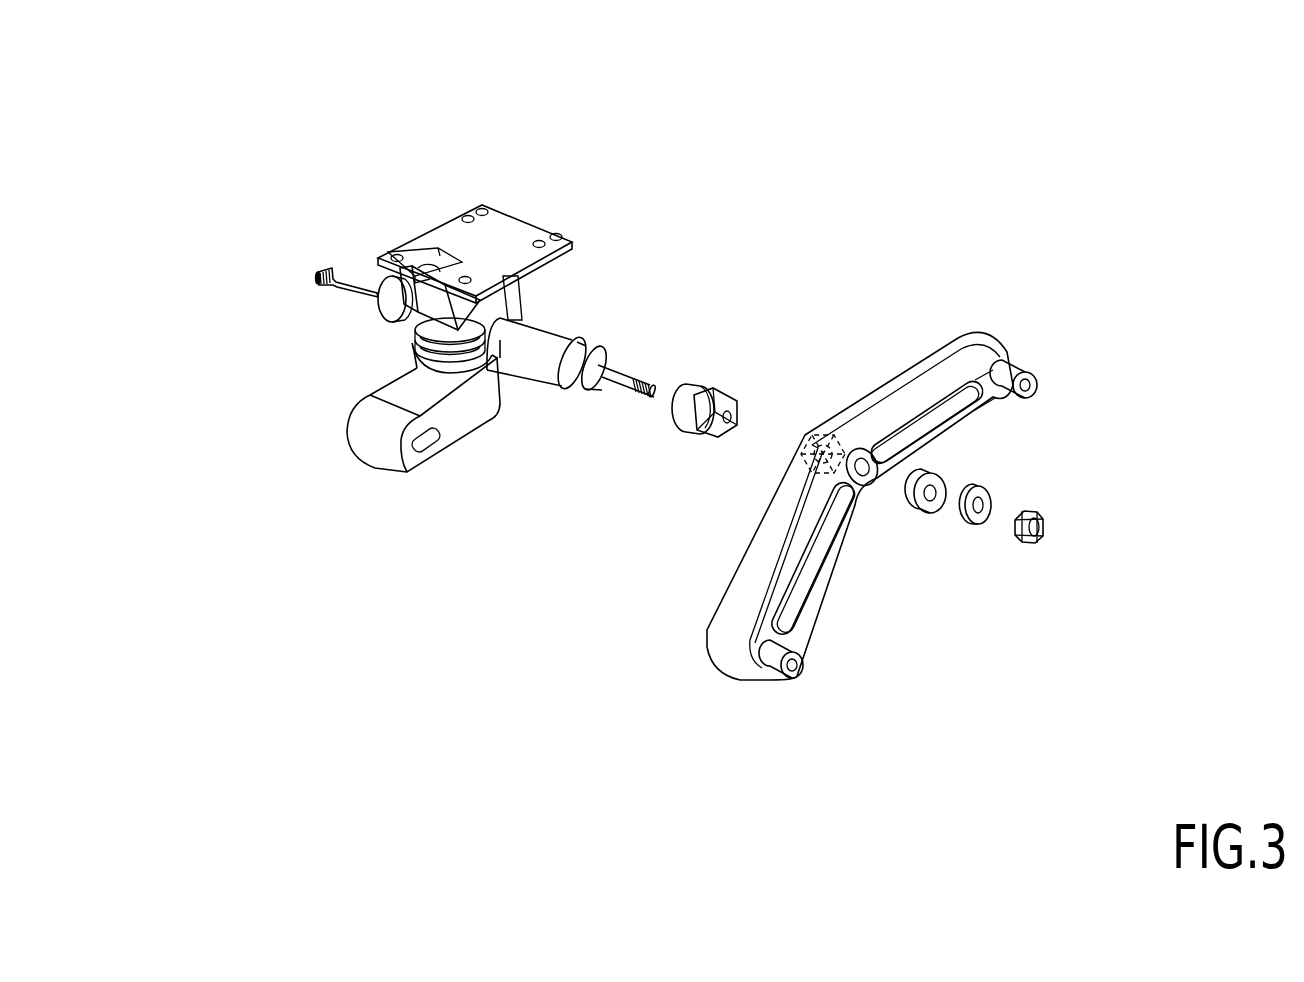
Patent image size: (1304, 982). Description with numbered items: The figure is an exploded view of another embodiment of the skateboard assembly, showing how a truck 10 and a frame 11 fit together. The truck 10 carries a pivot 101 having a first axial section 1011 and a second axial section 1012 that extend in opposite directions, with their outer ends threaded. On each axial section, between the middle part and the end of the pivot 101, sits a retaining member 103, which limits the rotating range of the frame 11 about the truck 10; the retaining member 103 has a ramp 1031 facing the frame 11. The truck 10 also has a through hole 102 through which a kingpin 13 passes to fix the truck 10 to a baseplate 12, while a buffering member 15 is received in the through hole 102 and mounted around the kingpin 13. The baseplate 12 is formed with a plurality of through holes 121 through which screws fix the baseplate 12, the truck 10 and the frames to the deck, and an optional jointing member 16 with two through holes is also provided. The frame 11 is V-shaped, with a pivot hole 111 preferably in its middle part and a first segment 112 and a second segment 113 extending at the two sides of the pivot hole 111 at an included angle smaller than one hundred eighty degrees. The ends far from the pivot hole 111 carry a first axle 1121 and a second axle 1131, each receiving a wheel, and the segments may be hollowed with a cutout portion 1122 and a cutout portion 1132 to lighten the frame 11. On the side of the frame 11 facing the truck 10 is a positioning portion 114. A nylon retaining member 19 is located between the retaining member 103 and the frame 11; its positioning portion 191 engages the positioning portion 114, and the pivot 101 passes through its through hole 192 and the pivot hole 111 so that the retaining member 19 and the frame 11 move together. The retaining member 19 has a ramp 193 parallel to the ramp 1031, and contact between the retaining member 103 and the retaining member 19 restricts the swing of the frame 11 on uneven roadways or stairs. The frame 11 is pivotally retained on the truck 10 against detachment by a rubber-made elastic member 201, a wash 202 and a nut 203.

The truck 10 is at (518, 389).
The pivot 101 is at (542, 360).
The through hole 102 is at (437, 350).
The retaining member 103 is at (563, 378).
The ramp 1031 is at (587, 385).
The first axial section 1011 is at (645, 405).
The second axial section 1012 is at (385, 291).
The frame 11 is at (870, 385).
The pivot hole 111 is at (867, 473).
The first segment 112 is at (730, 660).
The first axle 1121 is at (772, 670).
The cutout portion 1122 is at (820, 565).
The second segment 113 is at (913, 392).
The second axle 1131 is at (1020, 368).
The cutout portion 1132 is at (970, 400).
The positioning portion 114 is at (860, 480).
The baseplate 12 is at (430, 232).
The through holes 121 is at (478, 212).
The kingpin 13 is at (432, 268).
The buffering member 15 is at (437, 340).
The jointing member 16 is at (387, 427).
The retaining member 19 is at (713, 383).
The positioning portion 191 is at (741, 399).
The through hole 192 is at (735, 413).
The ramp 193 is at (681, 398).
The elastic member 201 is at (927, 510).
The wash 202 is at (975, 525).
The nut 203 is at (1030, 543).